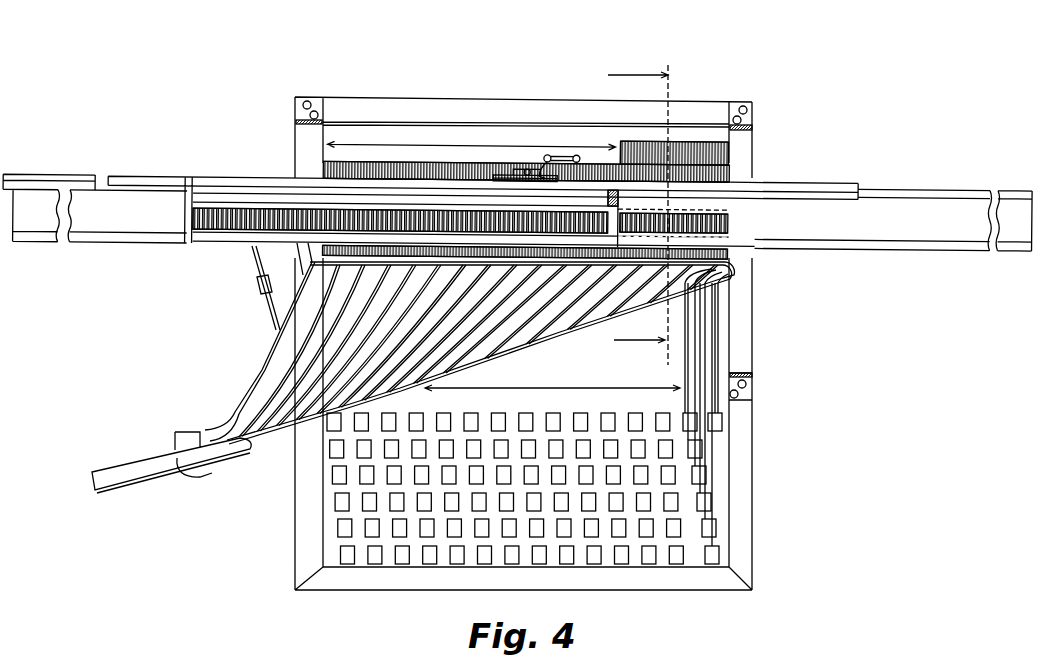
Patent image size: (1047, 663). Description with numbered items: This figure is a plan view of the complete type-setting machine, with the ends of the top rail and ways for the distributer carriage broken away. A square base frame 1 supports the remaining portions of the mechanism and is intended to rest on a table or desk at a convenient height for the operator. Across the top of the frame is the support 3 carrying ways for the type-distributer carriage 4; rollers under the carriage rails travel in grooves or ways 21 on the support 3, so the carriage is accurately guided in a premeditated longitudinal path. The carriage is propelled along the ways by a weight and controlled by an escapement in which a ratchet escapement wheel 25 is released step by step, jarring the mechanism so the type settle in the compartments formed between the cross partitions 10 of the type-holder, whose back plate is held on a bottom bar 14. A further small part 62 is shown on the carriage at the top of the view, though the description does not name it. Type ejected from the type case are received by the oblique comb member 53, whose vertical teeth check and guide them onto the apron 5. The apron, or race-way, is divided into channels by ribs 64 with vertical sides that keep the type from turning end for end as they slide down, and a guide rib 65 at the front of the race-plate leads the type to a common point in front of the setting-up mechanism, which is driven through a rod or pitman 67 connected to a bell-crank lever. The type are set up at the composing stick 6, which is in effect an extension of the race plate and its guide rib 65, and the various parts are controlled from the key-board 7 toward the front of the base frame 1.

The base frame 1 is at (360, 106).
The support 3 is at (147, 225).
The type-distributer carriage 4 is at (200, 238).
The apron 5 is at (285, 333).
The composing stick 6 is at (133, 465).
The key-board 7 is at (345, 497).
The cross partitions 10 is at (276, 210).
The bottom bar 14 is at (222, 204).
The grooves or ways 21 is at (906, 190).
The escapement wheel 25 is at (497, 169).
The comb member 53 is at (727, 262).
The yarn feeder 62 is at (563, 156).
The ribs 64 is at (343, 355).
The guide rib 65 is at (517, 347).
The rod or pitman 67 is at (251, 286).